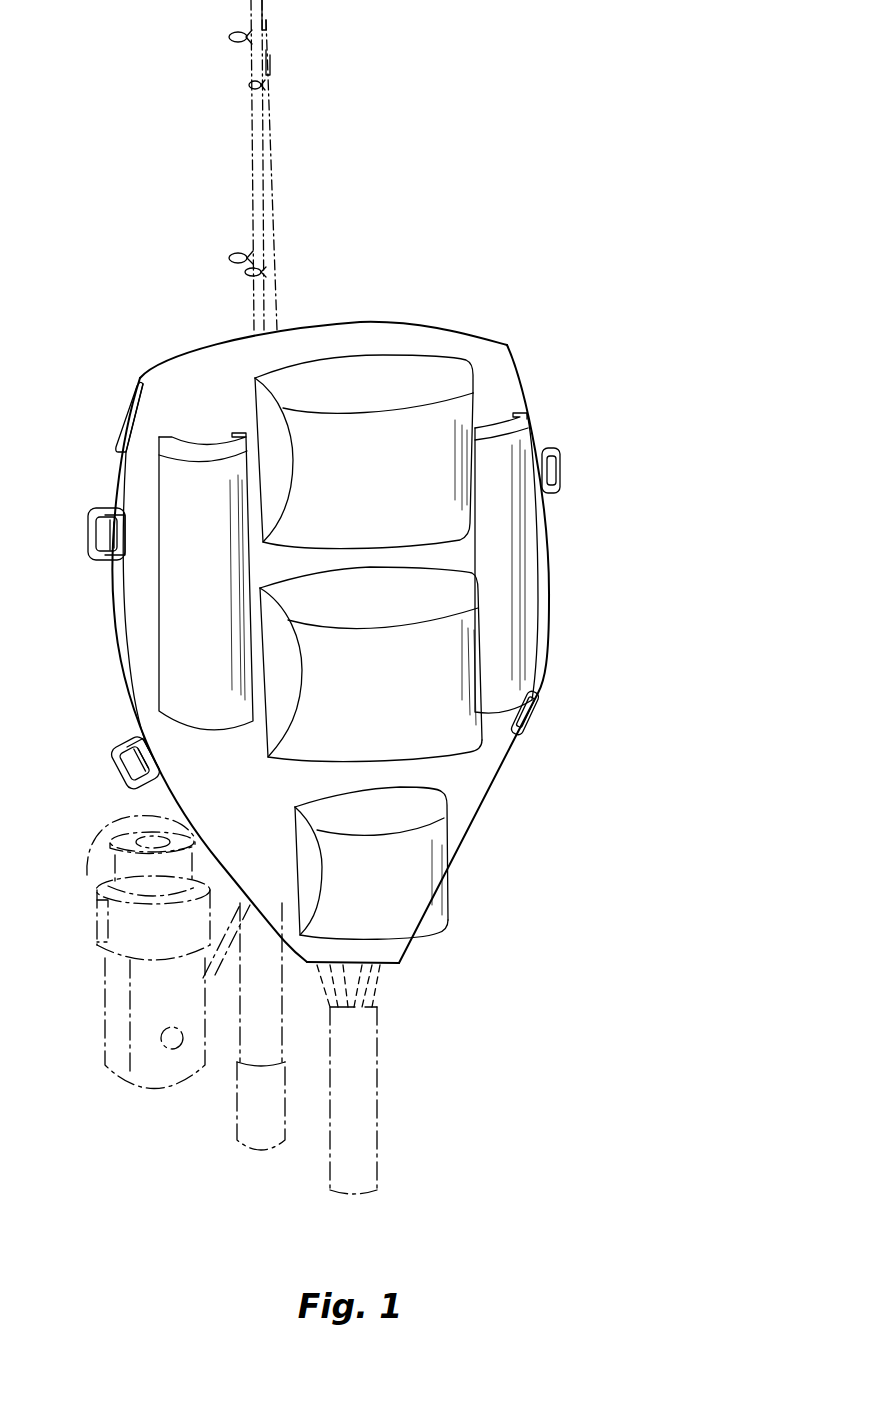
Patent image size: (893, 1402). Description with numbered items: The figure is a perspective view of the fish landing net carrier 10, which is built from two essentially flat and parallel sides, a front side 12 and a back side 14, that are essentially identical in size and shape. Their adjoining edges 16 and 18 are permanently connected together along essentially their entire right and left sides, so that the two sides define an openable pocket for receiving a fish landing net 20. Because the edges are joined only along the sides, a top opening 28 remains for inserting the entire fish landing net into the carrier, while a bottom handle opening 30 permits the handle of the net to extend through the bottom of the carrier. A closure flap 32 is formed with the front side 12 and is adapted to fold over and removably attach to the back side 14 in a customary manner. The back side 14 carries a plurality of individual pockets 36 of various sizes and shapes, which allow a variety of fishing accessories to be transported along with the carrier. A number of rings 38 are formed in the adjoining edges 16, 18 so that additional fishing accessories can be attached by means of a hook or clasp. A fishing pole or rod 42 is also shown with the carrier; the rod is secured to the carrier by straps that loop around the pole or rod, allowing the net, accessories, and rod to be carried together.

The fish landing net carrier 10 is at (338, 594).
The front side 12 is at (338, 594).
The back side 14 is at (140, 483).
The adjoining edge 16 is at (552, 563).
The adjoining edge 18 is at (118, 588).
The fish landing net 20 is at (387, 1052).
The top opening 28 is at (393, 326).
The bottom handle opening 30 is at (355, 968).
The closure flap 32 is at (117, 440).
The individual pockets 36 is at (348, 647).
The rings 38 is at (86, 530).
The fishing pole/rod 42 is at (288, 102).